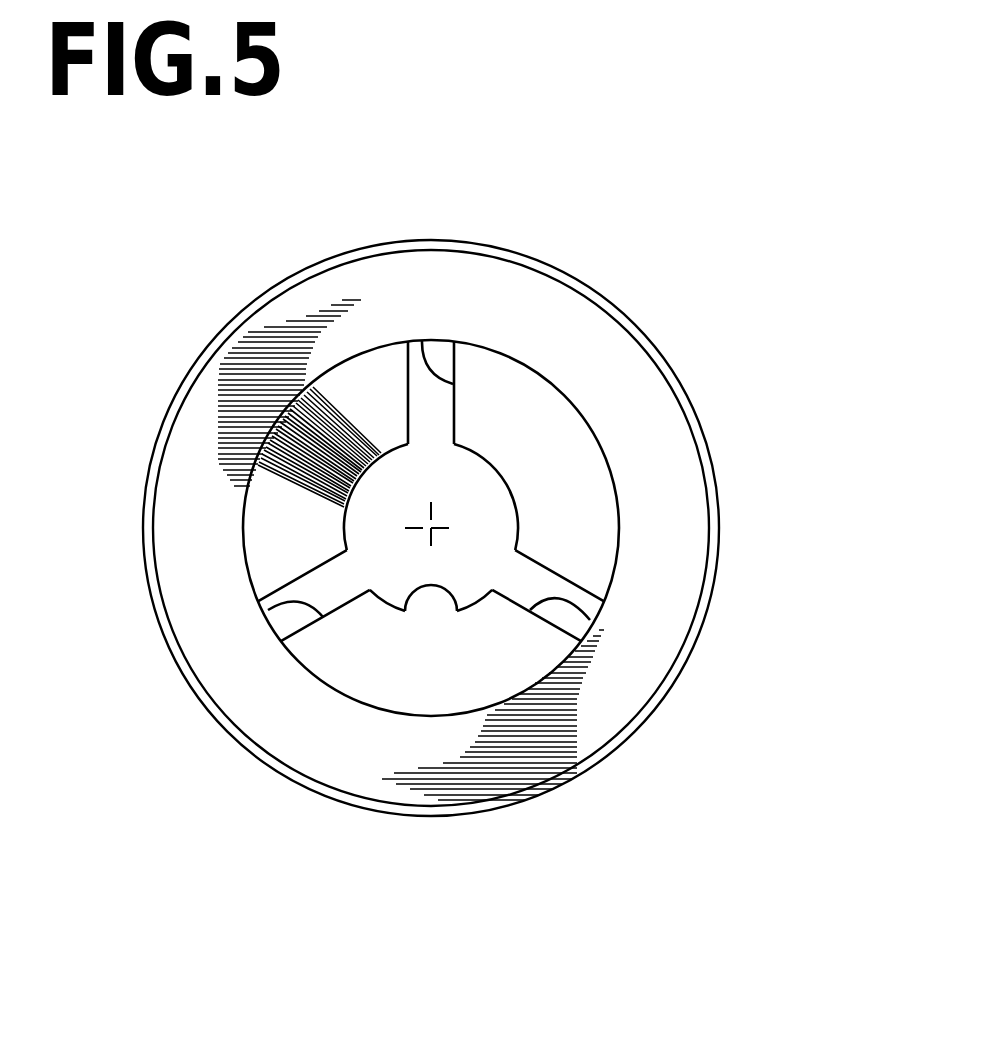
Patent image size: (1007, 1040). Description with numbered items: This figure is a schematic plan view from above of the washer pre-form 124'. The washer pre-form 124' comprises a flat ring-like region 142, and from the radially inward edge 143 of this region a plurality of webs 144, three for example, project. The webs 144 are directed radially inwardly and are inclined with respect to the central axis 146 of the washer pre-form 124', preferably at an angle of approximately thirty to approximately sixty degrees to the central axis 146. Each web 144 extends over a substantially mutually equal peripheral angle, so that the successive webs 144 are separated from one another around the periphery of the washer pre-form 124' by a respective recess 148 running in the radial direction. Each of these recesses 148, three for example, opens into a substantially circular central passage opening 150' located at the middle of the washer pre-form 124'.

The washer pre-form 124' is at (516, 528).
The flat ring-like region 142 is at (275, 337).
The radially inward edge 143 is at (477, 713).
The web 144 is at (283, 497).
The central axis 146 is at (432, 530).
The recess 148 is at (422, 340).
The central passage opening 150' is at (373, 746).